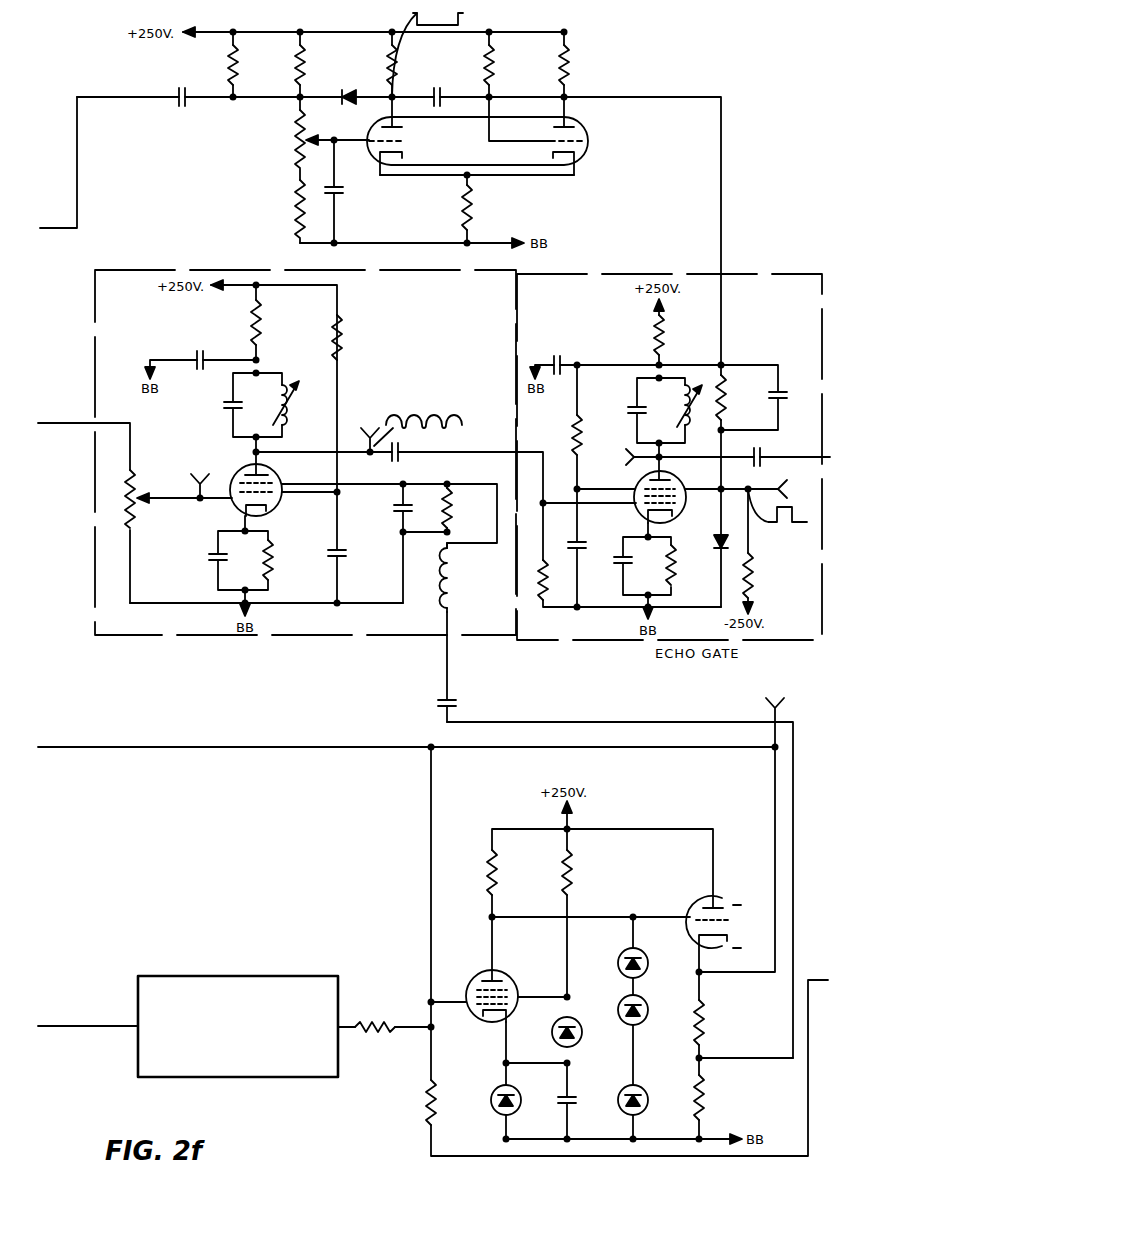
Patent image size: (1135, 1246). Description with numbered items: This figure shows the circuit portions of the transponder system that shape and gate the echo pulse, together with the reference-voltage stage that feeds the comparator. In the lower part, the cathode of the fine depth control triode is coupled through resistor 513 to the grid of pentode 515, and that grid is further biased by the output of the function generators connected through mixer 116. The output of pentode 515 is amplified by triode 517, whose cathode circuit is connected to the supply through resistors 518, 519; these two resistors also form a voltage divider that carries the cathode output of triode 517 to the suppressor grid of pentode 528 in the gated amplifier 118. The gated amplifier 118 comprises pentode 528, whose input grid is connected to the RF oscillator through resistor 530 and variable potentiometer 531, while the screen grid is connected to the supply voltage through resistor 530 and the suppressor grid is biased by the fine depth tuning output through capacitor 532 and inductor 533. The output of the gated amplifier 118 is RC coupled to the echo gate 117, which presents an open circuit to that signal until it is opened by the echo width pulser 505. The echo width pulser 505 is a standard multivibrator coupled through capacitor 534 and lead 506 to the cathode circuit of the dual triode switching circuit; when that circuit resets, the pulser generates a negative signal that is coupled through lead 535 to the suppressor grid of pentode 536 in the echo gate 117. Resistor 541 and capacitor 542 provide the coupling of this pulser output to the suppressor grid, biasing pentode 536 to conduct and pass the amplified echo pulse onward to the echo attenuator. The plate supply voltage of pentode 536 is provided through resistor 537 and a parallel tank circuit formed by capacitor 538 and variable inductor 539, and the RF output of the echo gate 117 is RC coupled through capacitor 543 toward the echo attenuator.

The echo width pulser 505 is at (289, 157).
The lead 506 is at (78, 172).
The capacitor 534 is at (180, 93).
The lead 535 is at (722, 238).
The resistor 530 is at (347, 347).
The variable potentiometer 531 is at (133, 484).
The pentode 528 is at (283, 480).
The inductor 533 is at (450, 583).
The capacitor 532 is at (450, 701).
The resistor 537 is at (655, 352).
The capacitor 538 is at (634, 407).
The variable inductor 539 is at (686, 389).
The resistor 541 is at (728, 406).
The capacitor 542 is at (782, 391).
The capacitor 543 is at (762, 456).
The pentode 536 is at (683, 487).
The gated amplifier 118 is at (148, 639).
The echo gate 117 is at (598, 643).
The mixer 116 is at (305, 977).
The pentode 515 is at (511, 982).
The triode 517 is at (693, 905).
The resistor 513 is at (434, 1100).
The resistor 518 is at (706, 1029).
The resistor 519 is at (709, 1102).